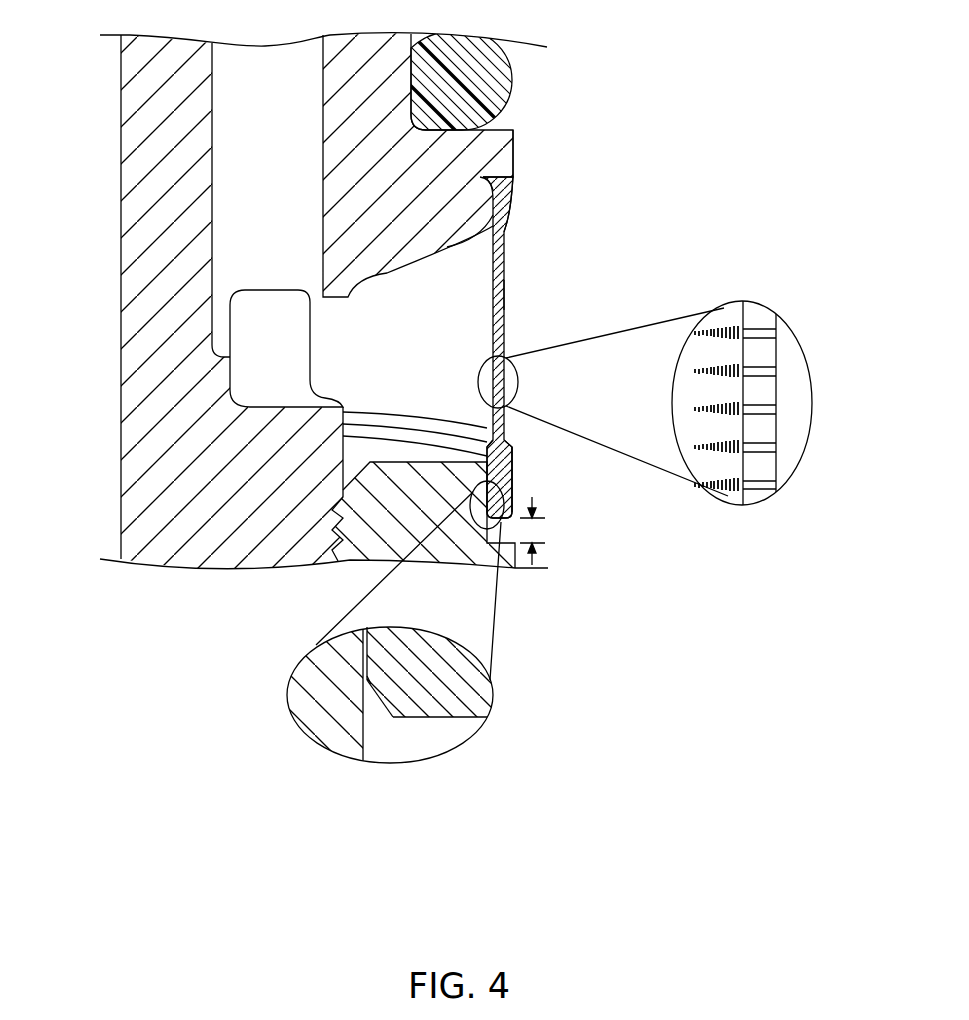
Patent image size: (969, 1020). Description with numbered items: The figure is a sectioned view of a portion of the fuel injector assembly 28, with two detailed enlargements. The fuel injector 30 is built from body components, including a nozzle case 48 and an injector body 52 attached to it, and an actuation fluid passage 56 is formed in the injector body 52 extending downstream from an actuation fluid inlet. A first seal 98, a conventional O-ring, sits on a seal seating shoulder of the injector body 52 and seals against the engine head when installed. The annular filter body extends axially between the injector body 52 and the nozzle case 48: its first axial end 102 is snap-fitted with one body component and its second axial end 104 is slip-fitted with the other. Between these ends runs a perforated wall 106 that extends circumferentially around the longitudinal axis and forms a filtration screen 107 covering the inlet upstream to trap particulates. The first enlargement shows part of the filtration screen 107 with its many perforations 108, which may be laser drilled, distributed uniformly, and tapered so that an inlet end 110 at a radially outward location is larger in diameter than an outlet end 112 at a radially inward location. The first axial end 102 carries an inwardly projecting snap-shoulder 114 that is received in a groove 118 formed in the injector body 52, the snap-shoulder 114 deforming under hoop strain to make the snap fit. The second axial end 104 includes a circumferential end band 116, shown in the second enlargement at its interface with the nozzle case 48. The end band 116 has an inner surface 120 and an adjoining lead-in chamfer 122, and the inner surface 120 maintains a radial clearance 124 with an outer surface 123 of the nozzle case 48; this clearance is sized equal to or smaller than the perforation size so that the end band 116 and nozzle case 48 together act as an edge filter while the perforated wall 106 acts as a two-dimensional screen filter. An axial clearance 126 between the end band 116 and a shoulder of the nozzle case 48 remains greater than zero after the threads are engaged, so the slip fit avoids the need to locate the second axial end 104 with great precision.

The fuel injector assembly 28 is at (612, 93).
The fuel injector 30 is at (121, 67).
The nozzle case 48 is at (507, 569).
The injector body 52 is at (515, 134).
The actuation fluid passage 56 is at (212, 118).
The first seal 98 is at (513, 75).
The first axial end 102 is at (525, 204).
The second axial end 104 is at (524, 480).
The perforated wall 106 is at (505, 326).
The filtration screen 107 is at (505, 296).
The perforations 108 is at (774, 484).
The inlet end 110 is at (786, 466).
The outlet end 112 is at (728, 491).
The snap-shoulder 114 is at (483, 178).
The end band 116 is at (512, 445).
The groove 118 is at (470, 240).
The inner surface 120 is at (364, 680).
The lead-in chamfer 122 is at (381, 706).
The outer surface 123 is at (372, 652).
The radial clearance 124 is at (370, 702).
The axial clearance 126 is at (546, 528).